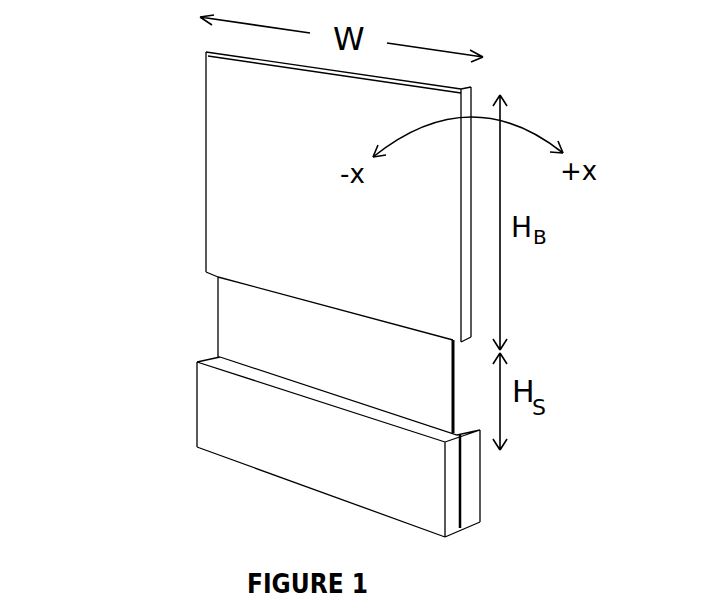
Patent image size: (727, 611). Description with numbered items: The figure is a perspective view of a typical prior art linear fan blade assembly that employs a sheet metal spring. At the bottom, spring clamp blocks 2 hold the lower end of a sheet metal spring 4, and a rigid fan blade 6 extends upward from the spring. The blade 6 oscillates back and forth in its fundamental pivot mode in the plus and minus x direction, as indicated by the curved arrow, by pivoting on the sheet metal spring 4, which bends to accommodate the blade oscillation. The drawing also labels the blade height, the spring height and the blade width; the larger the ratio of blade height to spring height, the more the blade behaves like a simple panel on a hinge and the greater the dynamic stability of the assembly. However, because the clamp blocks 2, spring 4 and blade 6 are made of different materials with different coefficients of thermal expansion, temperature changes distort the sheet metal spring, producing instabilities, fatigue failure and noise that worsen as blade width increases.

The spring clamp blocks 2 is at (228, 410).
The sheet metal spring 4 is at (232, 323).
The rigid fan blade 6 is at (227, 248).